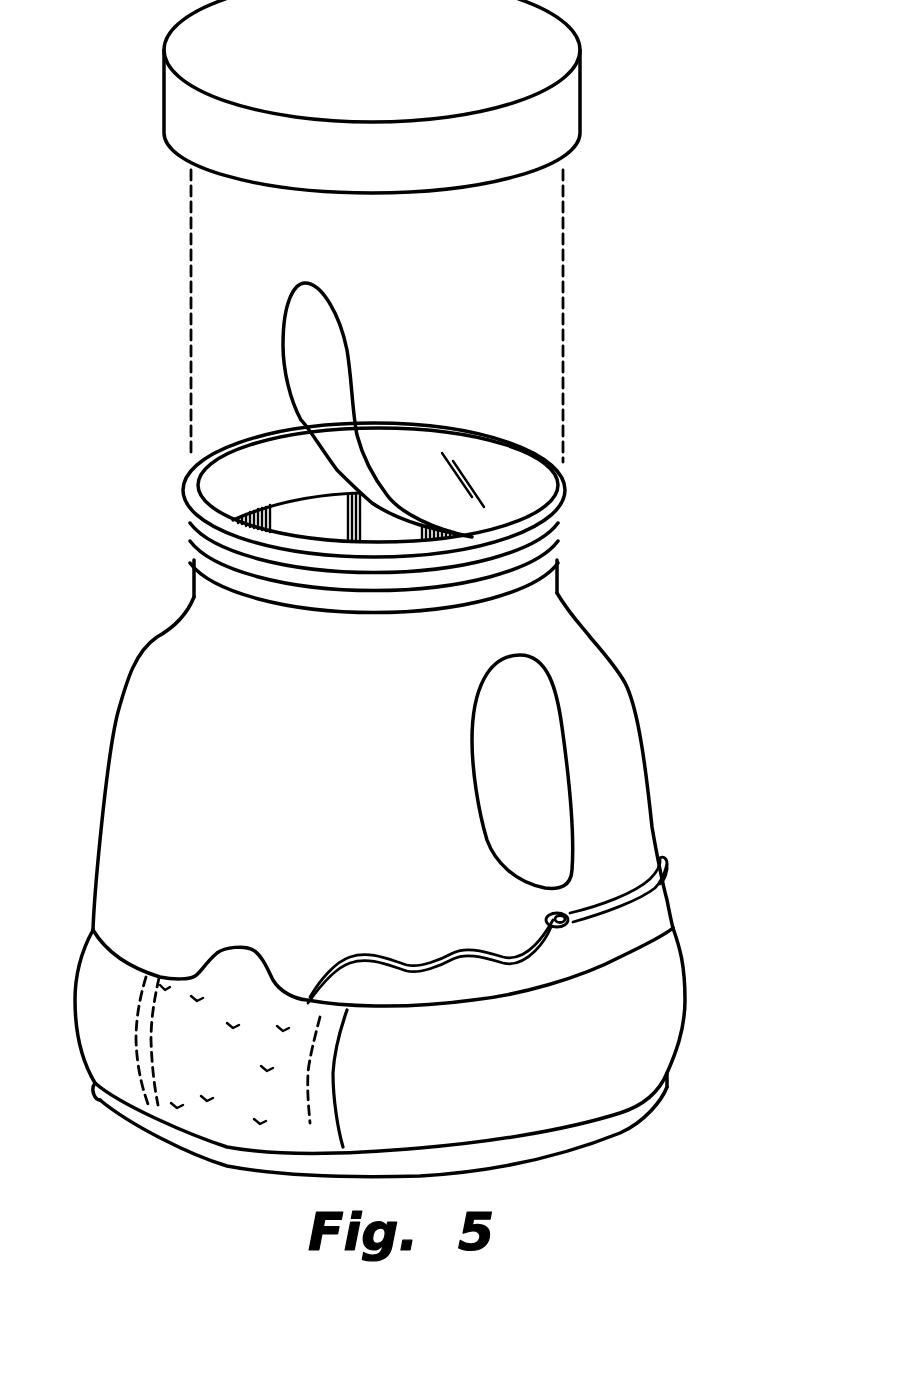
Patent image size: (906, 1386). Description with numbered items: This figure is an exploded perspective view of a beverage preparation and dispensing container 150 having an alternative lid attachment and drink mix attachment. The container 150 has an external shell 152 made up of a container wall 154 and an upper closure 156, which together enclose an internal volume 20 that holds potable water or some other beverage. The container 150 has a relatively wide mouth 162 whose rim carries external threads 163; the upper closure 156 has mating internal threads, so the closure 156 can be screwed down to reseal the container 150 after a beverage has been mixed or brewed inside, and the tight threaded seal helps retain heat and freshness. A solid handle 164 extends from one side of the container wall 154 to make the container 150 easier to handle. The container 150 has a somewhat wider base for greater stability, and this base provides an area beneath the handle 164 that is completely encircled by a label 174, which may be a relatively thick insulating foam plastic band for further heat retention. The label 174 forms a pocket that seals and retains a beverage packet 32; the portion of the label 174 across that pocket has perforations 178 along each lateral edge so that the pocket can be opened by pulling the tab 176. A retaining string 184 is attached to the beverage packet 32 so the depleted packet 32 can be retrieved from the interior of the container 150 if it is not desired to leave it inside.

The upper closure 156 is at (390, 57).
The mouth 162 is at (278, 453).
The internal volume 20 is at (307, 510).
The external threads 163 is at (187, 523).
The external shell 152 is at (160, 633).
The container wall 154 is at (338, 795).
The handle 164 is at (627, 683).
The label 174 is at (512, 1088).
The tab 176 is at (170, 980).
The perforations 178 is at (330, 1057).
The beverage packet 32 is at (172, 1107).
The retaining string 184 is at (453, 947).
The container 150 is at (707, 881).